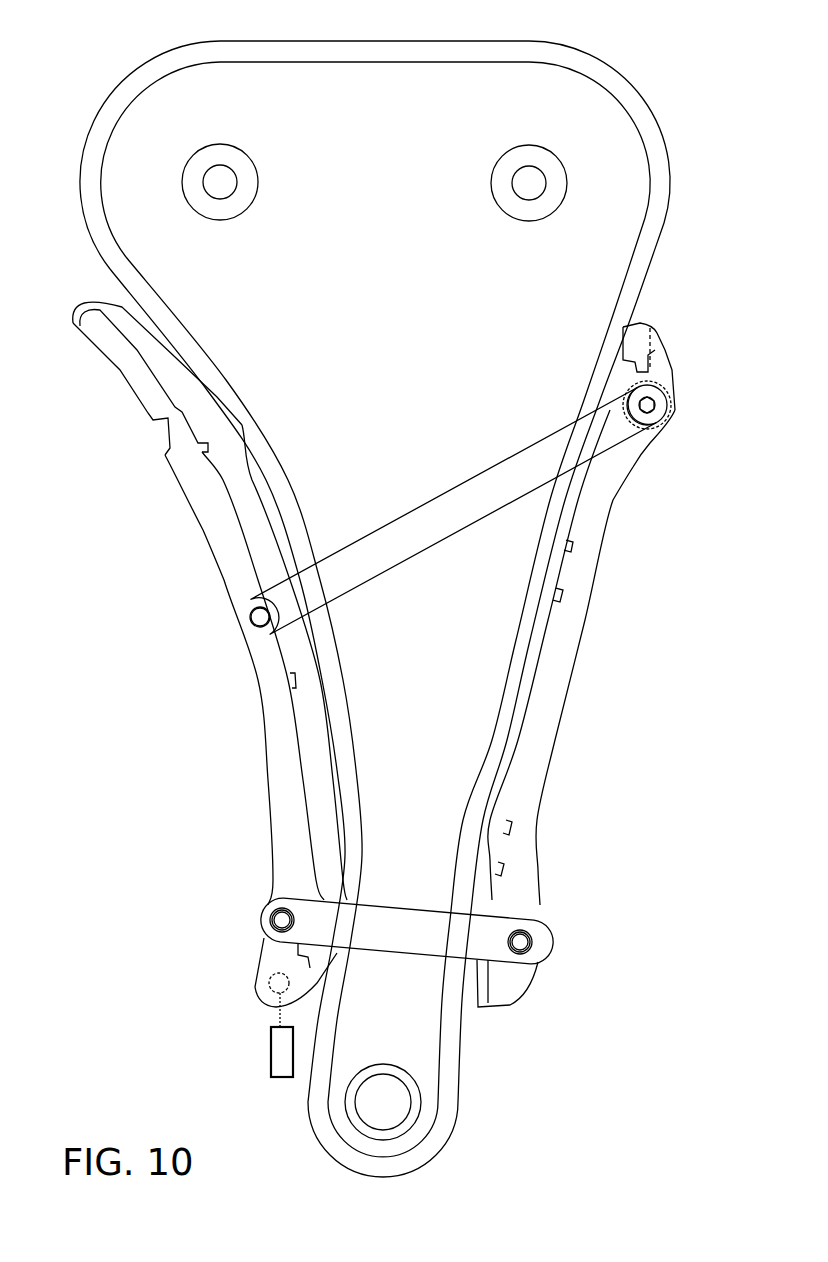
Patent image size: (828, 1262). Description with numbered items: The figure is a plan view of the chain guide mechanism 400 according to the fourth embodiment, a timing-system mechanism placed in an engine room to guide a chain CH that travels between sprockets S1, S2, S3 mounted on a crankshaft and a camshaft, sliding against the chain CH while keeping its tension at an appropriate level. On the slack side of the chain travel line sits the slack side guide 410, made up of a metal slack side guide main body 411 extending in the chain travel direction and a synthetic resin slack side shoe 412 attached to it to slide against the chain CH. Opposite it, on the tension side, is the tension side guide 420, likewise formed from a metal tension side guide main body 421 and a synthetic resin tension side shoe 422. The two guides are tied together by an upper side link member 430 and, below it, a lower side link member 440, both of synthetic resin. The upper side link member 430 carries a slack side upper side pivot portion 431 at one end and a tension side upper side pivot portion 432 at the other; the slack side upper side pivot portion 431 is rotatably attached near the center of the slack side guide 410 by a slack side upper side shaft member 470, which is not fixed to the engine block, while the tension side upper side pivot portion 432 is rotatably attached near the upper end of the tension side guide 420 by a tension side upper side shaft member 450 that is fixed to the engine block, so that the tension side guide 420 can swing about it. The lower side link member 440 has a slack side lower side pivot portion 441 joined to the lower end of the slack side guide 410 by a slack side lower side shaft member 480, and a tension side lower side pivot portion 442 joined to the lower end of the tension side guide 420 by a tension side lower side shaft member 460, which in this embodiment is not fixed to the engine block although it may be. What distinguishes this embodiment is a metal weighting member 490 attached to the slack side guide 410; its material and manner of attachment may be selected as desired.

The chain guide mechanism 400 is at (84, 74).
The chain CH is at (622, 92).
The sprocket S1 is at (415, 1107).
The sprocket S2 is at (220, 158).
The sprocket S3 is at (529, 158).
The slack side guide 410 is at (210, 603).
The slack side guide main body 411 is at (291, 765).
The slack side shoe 412 is at (313, 710).
The tension side guide 420 is at (578, 665).
The tension side guide main body 421 is at (570, 615).
The tension side shoe 422 is at (560, 565).
The upper side link member 430 is at (428, 508).
The slack side upper side pivot portion 431 is at (246, 604).
The tension side upper side pivot portion 432 is at (646, 430).
The lower side link member 440 is at (396, 965).
The slack side lower side pivot portion 441 is at (272, 906).
The tension side lower side pivot portion 442 is at (534, 927).
The tension side upper side shaft member 450 is at (649, 388).
The tension side lower side shaft member 460 is at (524, 942).
The slack side upper side shaft member 470 is at (258, 617).
The slack side lower side shaft member 480 is at (282, 920).
The weighting member 490 is at (278, 1062).